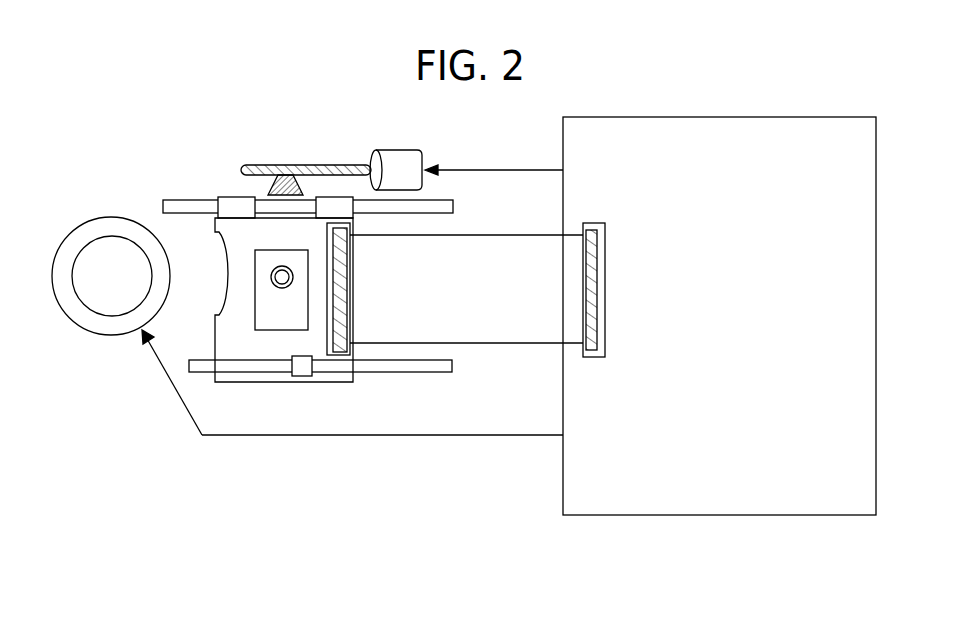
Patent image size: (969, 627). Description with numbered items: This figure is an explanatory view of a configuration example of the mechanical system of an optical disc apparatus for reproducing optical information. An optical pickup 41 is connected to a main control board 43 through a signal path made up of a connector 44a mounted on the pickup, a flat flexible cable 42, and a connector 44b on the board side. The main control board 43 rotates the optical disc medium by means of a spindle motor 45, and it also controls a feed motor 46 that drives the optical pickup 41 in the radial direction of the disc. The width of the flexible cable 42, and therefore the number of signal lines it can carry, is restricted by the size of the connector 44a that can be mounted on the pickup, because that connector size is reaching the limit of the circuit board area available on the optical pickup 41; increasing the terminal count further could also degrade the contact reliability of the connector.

The optical pickup 41 is at (268, 383).
The flexible cable 42 is at (478, 235).
The main control board 43 is at (721, 117).
The connector 44a is at (340, 290).
The connector 44b is at (594, 283).
The spindle motor 45 is at (104, 217).
The feed motor 46 is at (397, 148).